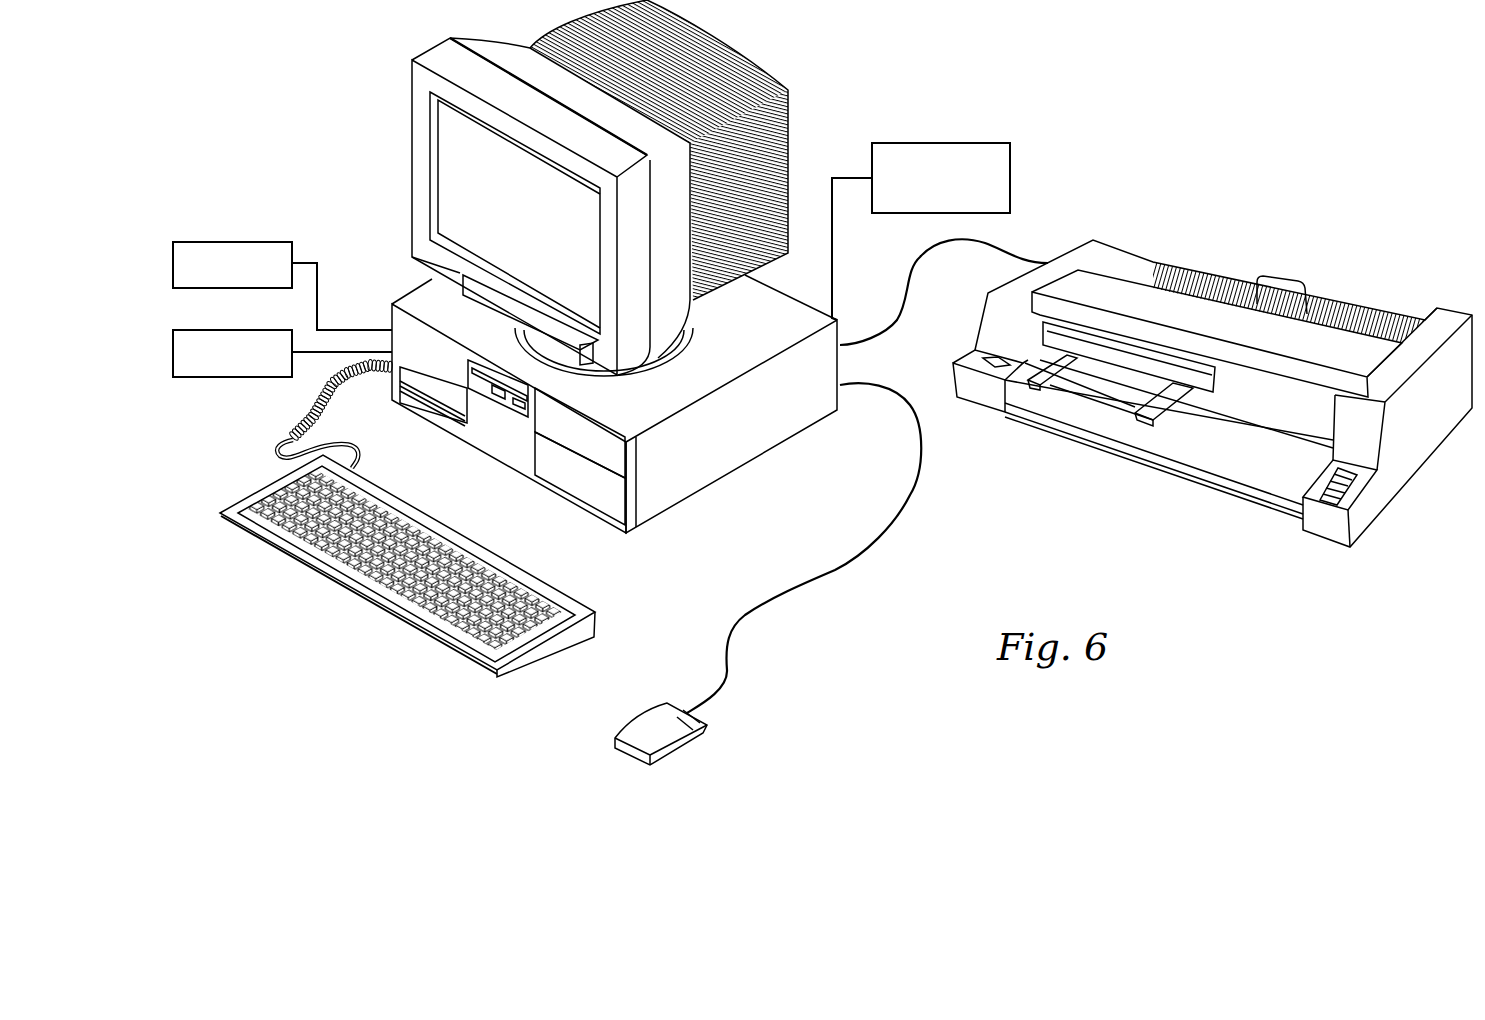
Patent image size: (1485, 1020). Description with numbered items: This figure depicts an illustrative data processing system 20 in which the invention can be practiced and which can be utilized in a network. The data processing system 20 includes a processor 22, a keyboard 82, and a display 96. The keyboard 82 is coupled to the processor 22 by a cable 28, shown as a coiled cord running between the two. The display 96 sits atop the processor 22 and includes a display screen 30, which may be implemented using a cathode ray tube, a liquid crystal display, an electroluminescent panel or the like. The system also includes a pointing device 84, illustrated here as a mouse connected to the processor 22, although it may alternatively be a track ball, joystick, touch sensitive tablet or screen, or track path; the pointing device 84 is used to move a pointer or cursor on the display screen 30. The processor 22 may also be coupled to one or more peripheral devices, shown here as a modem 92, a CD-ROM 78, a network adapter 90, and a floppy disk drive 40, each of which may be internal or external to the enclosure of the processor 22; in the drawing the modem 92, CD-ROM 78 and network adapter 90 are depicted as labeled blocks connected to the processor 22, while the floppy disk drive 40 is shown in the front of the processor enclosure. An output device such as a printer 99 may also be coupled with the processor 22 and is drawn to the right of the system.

The data processing system 20 is at (1000, 47).
The processor 22 is at (636, 552).
The cable 28 is at (306, 415).
The display screen 30 is at (535, 226).
The floppy disk drive 40 is at (499, 398).
The CD-ROM 78 is at (223, 330).
The keyboard 82 is at (380, 616).
The pointing device 84 is at (700, 744).
The network adapter 90 is at (1010, 158).
The modem 92 is at (223, 242).
The display 96 is at (390, 141).
The printer 99 is at (1156, 230).